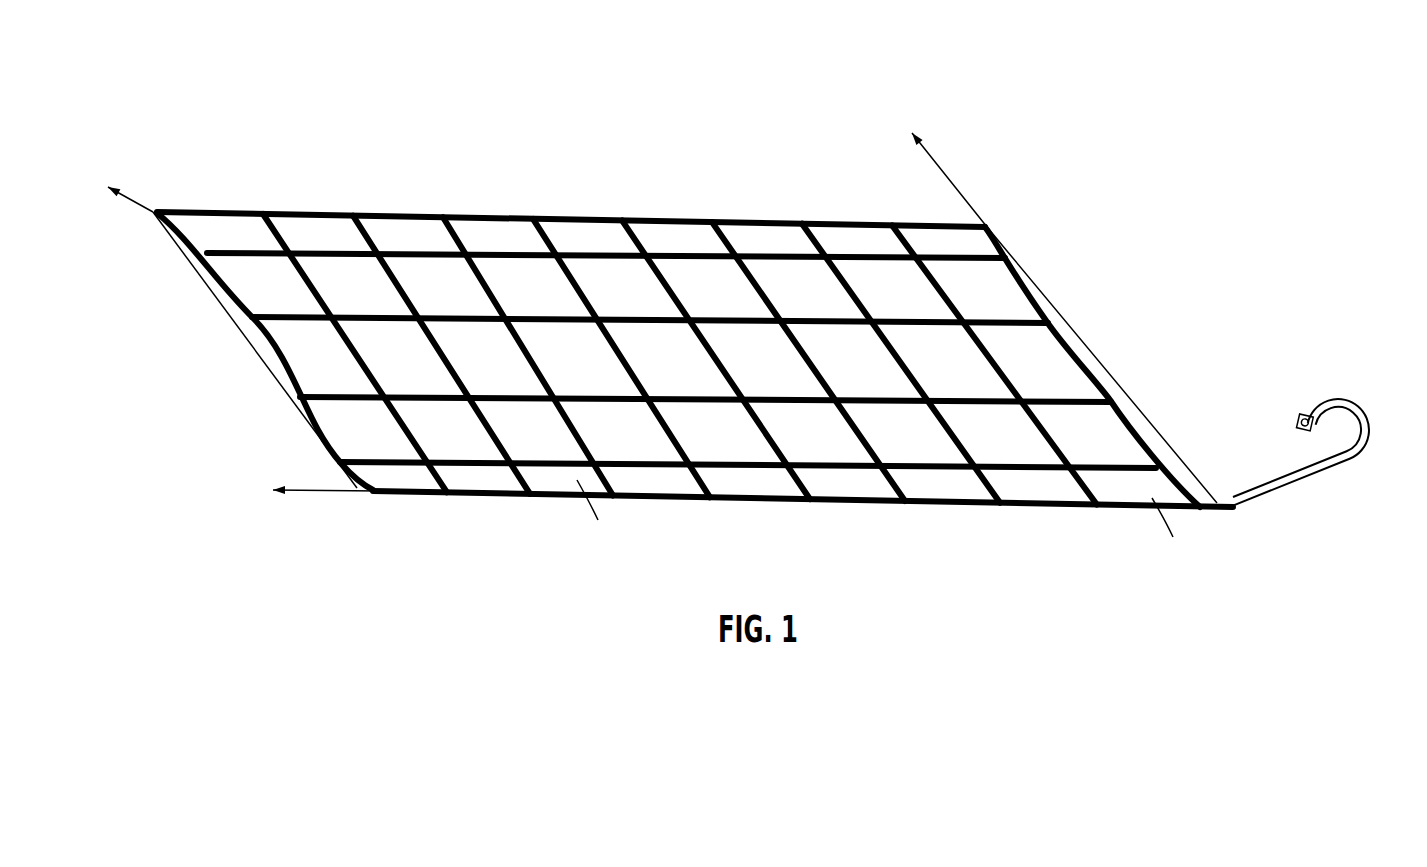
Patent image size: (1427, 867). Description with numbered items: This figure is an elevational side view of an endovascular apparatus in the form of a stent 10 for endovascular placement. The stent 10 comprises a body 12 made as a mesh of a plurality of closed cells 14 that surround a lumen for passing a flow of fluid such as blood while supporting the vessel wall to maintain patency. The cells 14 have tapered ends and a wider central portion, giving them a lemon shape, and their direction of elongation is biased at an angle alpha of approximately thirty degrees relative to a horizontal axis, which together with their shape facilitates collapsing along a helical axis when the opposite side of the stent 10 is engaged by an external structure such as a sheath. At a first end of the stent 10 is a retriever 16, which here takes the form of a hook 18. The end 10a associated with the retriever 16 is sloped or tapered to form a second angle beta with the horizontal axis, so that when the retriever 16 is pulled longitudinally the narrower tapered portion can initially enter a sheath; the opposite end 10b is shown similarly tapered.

The stent 10 is at (663, 326).
The end of the stent 10a is at (186, 92).
The second edge / transverse direction of net 10b is at (202, 343).
The body 12 is at (853, 490).
The closed cells 14 is at (776, 372).
The retriever 16 is at (1330, 472).
The hook 18 is at (1360, 413).